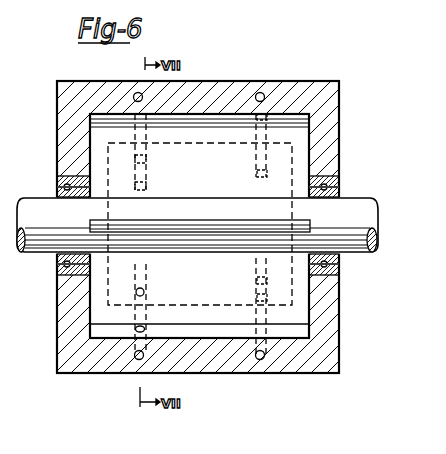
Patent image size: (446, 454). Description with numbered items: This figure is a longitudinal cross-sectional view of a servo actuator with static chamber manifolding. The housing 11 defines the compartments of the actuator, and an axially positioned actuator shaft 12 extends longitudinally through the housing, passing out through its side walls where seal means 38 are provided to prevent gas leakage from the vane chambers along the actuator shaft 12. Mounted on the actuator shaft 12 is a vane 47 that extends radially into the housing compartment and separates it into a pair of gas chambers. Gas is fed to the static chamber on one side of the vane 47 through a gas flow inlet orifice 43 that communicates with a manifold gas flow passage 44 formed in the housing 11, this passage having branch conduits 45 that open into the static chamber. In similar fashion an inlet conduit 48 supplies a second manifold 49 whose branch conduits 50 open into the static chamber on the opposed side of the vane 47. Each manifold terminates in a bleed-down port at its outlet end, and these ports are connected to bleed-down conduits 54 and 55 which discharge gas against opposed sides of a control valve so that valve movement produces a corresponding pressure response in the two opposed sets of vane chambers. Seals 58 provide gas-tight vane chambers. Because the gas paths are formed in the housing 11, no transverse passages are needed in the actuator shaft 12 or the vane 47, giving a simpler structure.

The housing 11 is at (62, 98).
The actuator shaft 12 is at (350, 208).
The seal means 38 is at (325, 180).
The gas flow inlet orifice 43 is at (145, 290).
The manifold gas flow passage 44 is at (137, 92).
The branch conduits 45 is at (147, 159).
The vane 47 is at (210, 175).
The inlet conduit 48 is at (256, 173).
The manifold 49 is at (262, 92).
The branch conduits 50 is at (261, 120).
The bleed-down conduit 54 is at (262, 278).
The bleed-down conduit 55 is at (147, 188).
The seal 58 is at (100, 141).